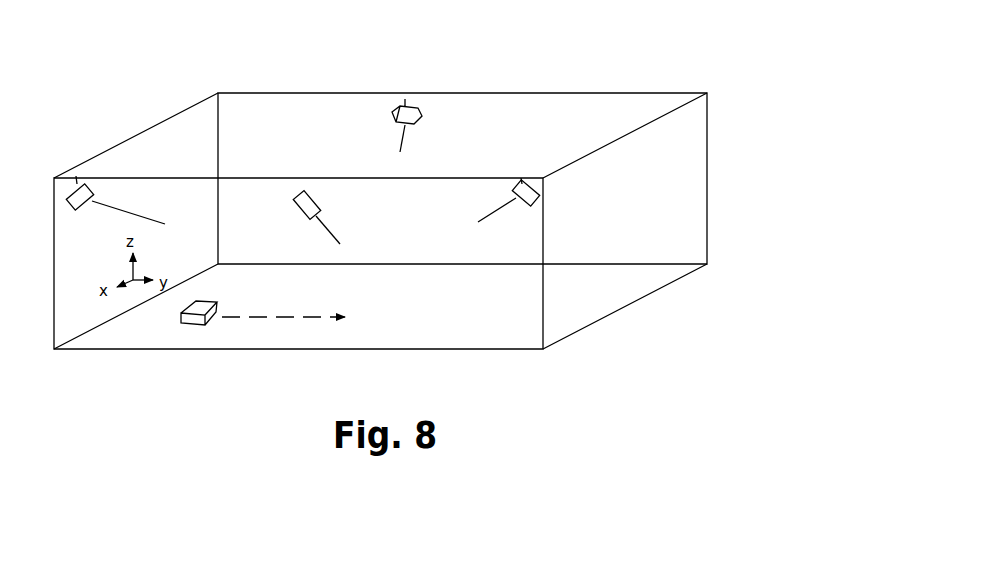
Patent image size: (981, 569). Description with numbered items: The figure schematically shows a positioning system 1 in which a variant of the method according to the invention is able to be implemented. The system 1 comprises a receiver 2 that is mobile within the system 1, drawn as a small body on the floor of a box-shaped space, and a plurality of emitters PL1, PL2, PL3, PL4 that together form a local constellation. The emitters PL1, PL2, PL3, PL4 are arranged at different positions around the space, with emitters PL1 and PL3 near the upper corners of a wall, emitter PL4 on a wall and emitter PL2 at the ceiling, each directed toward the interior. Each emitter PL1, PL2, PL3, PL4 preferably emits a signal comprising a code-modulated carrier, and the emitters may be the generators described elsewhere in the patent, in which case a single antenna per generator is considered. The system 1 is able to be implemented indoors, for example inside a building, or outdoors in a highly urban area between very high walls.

The system 1 is at (709, 84).
The receiver 2 is at (194, 324).
The emitter PL1 is at (115, 204).
The emitter PL2 is at (386, 125).
The emitter PL3 is at (509, 209).
The emitter PL4 is at (301, 217).